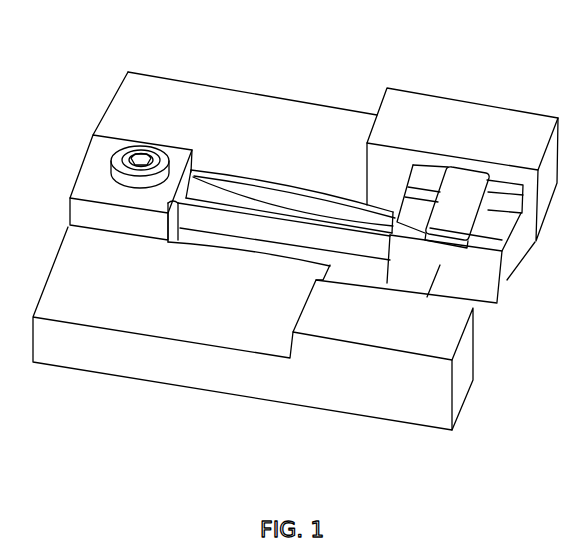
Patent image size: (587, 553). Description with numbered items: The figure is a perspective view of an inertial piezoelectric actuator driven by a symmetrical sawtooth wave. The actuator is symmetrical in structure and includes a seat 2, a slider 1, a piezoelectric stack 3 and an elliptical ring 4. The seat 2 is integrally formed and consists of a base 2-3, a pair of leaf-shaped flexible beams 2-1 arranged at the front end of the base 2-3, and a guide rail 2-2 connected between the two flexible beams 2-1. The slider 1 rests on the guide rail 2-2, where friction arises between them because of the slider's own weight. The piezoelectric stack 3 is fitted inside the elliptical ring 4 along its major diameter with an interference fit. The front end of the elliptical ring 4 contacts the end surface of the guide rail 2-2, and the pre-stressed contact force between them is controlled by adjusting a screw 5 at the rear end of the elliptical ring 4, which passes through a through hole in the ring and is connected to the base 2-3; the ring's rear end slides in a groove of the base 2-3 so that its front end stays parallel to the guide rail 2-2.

The slider 1 is at (458, 208).
The seat 2 is at (445, 262).
The leaf-shaped flexible beams 2-1 is at (480, 162).
The guide rail 2-2 is at (425, 192).
The base 2-3 is at (337, 142).
The piezoelectric stack 3 is at (275, 200).
The elliptical ring 4 is at (212, 223).
The screw 5 is at (133, 187).